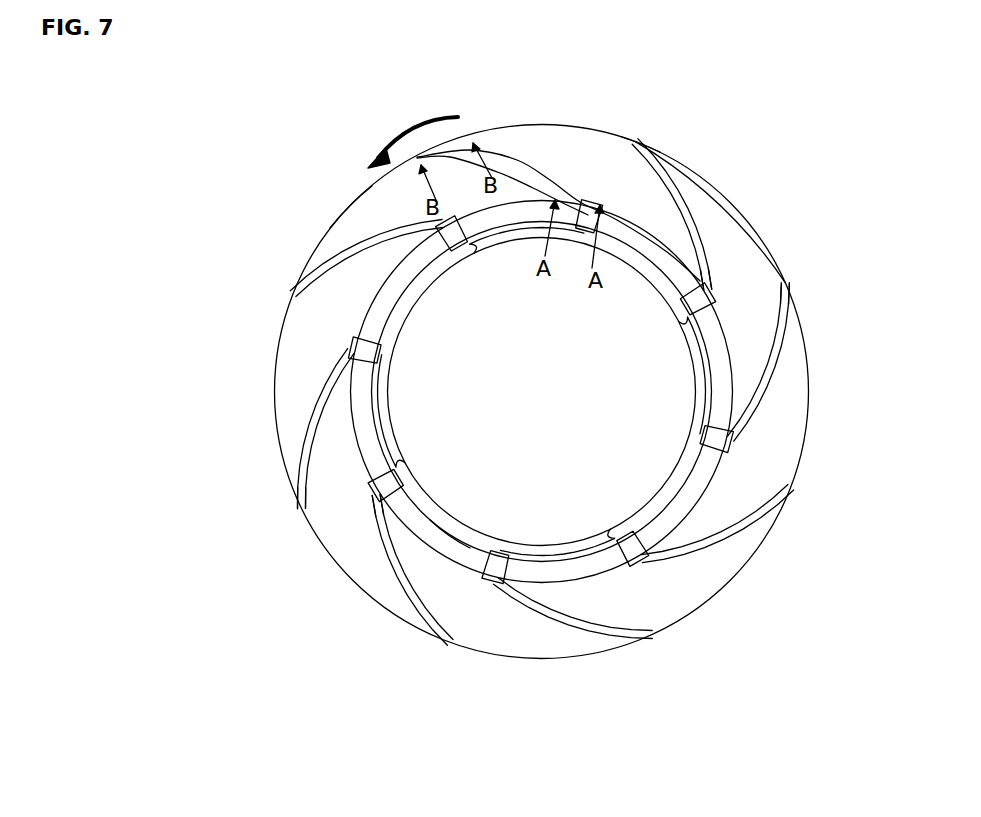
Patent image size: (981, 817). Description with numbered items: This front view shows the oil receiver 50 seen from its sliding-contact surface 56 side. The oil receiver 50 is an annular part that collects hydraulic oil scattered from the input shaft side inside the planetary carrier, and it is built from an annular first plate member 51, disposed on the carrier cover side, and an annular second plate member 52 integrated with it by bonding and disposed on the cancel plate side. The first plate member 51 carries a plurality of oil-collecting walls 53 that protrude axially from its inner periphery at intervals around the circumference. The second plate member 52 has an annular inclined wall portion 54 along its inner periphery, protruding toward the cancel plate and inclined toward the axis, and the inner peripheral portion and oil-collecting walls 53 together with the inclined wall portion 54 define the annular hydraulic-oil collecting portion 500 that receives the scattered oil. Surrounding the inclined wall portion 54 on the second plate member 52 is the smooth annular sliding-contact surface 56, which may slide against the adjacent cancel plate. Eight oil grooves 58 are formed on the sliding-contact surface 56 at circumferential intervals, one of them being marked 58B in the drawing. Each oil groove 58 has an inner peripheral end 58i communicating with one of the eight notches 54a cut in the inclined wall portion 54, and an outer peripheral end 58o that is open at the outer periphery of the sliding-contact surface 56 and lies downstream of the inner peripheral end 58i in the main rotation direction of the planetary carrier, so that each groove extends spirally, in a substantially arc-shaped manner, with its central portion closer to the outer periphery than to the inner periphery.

The oil receiver 50 is at (650, 138).
The first plate member 51 is at (645, 266).
The second plate member 52 is at (698, 624).
The oil-collecting walls 53 is at (503, 255).
The inclined wall portion 54 is at (538, 578).
The notches 54a is at (686, 296).
The sliding-contact surface 56 is at (360, 211).
The oil grooves 58 is at (326, 262).
The blade in position B 58B is at (540, 143).
The inner peripheral end 58i is at (710, 285).
The outer peripheral end 58o is at (790, 300).
The hydraulic-oil collecting portion 500 is at (458, 528).